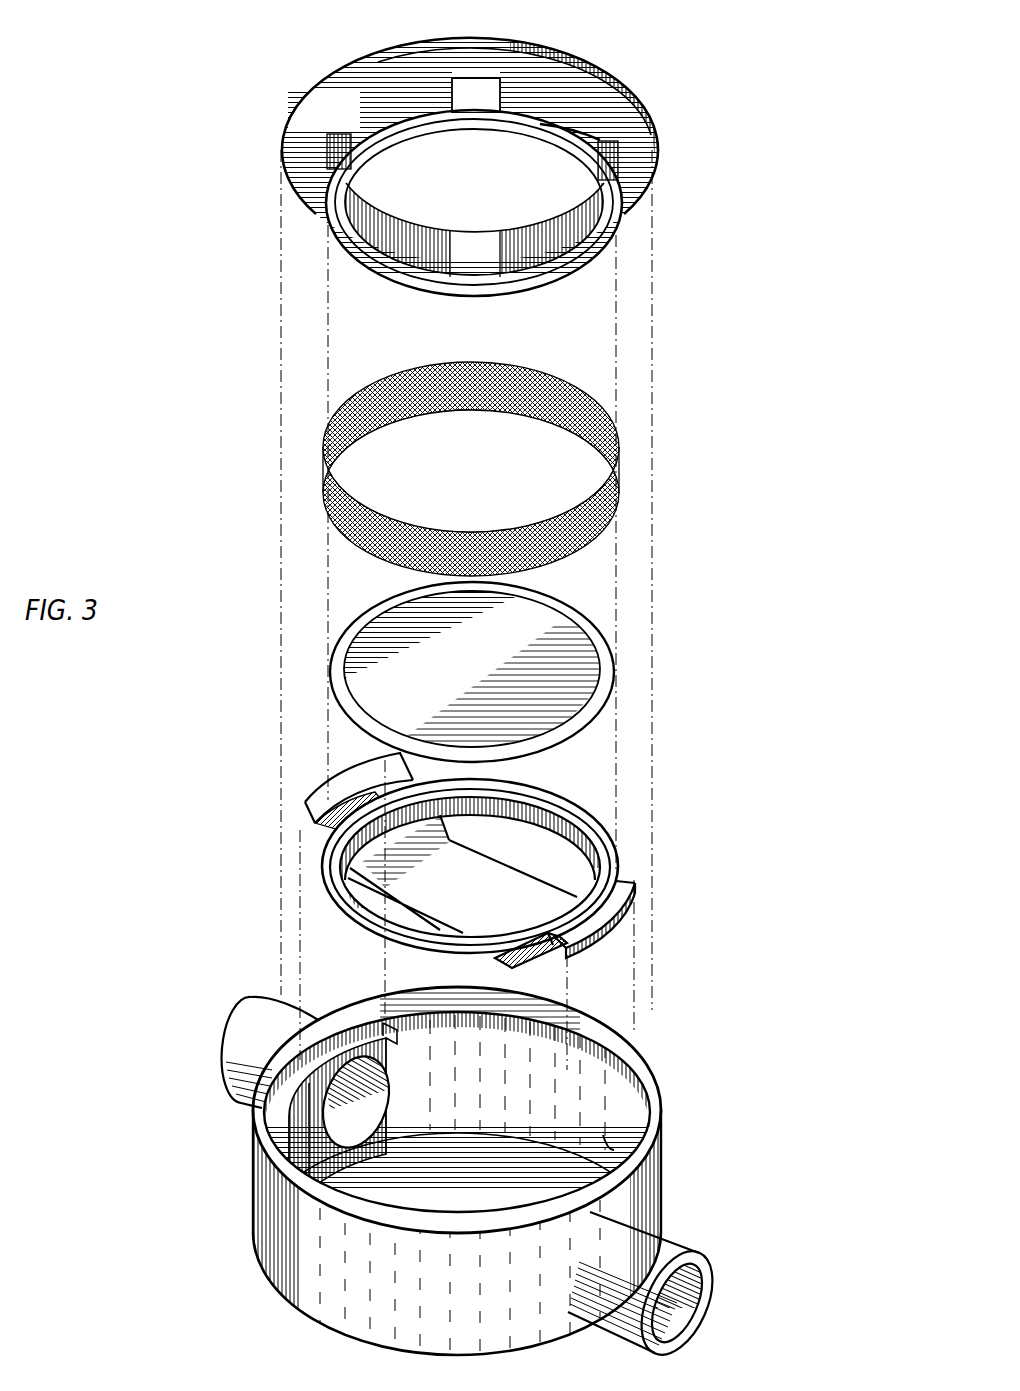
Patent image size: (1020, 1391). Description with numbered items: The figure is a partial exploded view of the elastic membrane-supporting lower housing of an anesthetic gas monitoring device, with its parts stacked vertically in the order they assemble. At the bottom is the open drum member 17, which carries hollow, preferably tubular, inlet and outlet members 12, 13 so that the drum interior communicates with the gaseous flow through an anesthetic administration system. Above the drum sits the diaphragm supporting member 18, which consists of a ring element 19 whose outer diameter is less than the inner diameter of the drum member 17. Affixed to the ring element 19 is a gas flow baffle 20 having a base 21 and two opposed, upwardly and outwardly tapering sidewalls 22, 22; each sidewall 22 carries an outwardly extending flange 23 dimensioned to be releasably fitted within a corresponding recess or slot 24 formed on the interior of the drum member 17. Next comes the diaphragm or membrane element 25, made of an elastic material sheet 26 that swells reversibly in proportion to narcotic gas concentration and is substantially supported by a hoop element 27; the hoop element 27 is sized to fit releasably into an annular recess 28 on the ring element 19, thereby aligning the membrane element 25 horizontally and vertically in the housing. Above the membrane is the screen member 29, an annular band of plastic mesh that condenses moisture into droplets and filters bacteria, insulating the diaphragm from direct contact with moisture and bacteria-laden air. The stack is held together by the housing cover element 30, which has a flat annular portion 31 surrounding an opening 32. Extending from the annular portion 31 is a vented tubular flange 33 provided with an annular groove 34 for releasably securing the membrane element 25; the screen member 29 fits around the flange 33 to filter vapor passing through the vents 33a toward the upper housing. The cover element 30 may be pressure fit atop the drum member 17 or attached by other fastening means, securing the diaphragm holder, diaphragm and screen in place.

The inlet member 12 is at (232, 1045).
The outlet member 13 is at (668, 1250).
The open drum member 17 is at (451, 1175).
The diaphragm supporting member 18 is at (463, 873).
The ring element 19 is at (542, 815).
The gas flow baffle 20 is at (547, 877).
The base 21 is at (470, 891).
The sidewall 22 is at (315, 820).
The flange 23 is at (338, 778).
The recess or slot 24 is at (392, 1040).
The diaphragm/membrane element 25 is at (516, 661).
The elastic material sheet 26 is at (471, 656).
The hoop element 27 is at (612, 655).
The annular recess 28 is at (357, 908).
The screen member 29 is at (465, 364).
The housing cover element 30 is at (665, 123).
The flat annular portion 31 is at (293, 173).
The opening 32 is at (572, 180).
The vented tubular flange 33 is at (481, 92).
The vents 33a is at (568, 126).
The annular groove 34 is at (553, 275).